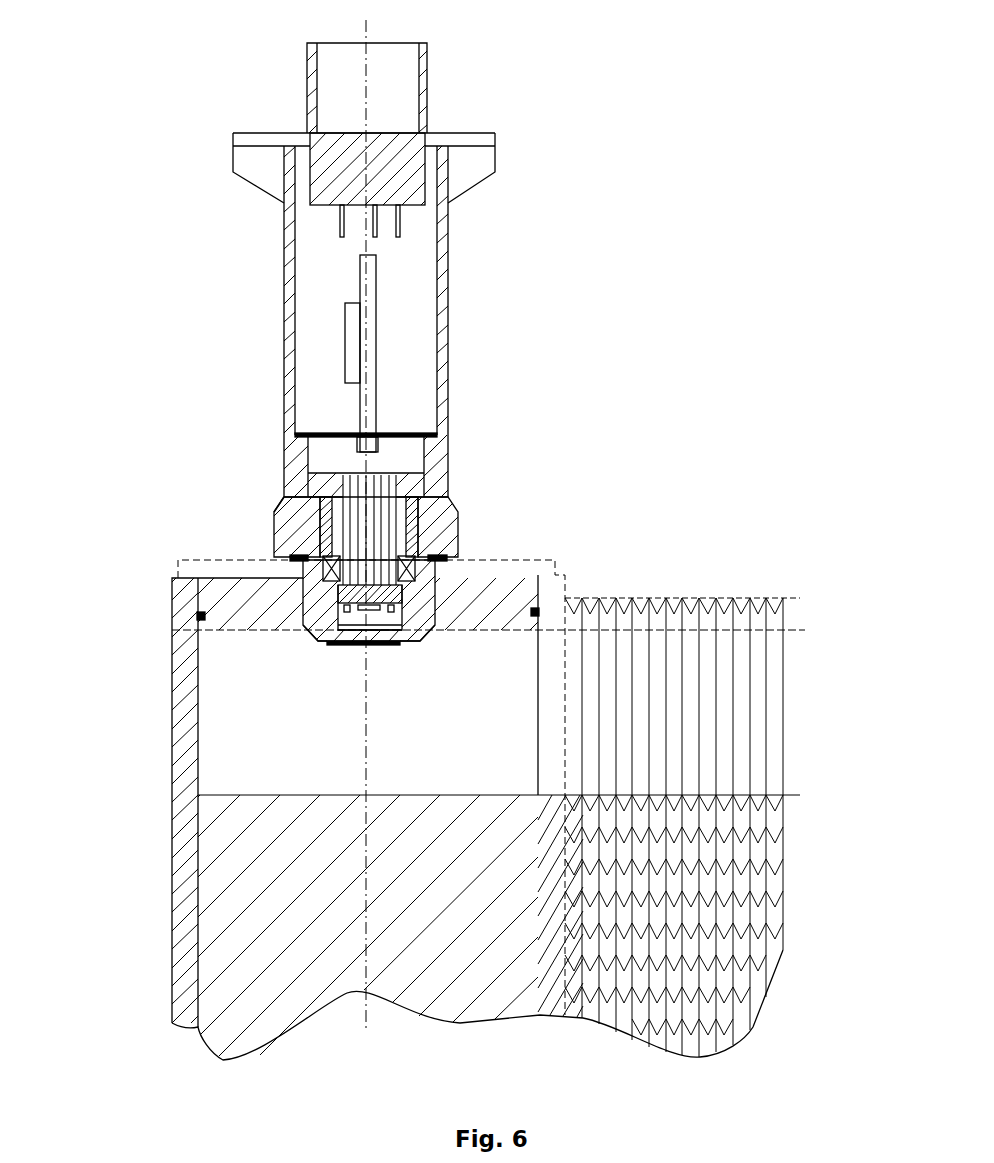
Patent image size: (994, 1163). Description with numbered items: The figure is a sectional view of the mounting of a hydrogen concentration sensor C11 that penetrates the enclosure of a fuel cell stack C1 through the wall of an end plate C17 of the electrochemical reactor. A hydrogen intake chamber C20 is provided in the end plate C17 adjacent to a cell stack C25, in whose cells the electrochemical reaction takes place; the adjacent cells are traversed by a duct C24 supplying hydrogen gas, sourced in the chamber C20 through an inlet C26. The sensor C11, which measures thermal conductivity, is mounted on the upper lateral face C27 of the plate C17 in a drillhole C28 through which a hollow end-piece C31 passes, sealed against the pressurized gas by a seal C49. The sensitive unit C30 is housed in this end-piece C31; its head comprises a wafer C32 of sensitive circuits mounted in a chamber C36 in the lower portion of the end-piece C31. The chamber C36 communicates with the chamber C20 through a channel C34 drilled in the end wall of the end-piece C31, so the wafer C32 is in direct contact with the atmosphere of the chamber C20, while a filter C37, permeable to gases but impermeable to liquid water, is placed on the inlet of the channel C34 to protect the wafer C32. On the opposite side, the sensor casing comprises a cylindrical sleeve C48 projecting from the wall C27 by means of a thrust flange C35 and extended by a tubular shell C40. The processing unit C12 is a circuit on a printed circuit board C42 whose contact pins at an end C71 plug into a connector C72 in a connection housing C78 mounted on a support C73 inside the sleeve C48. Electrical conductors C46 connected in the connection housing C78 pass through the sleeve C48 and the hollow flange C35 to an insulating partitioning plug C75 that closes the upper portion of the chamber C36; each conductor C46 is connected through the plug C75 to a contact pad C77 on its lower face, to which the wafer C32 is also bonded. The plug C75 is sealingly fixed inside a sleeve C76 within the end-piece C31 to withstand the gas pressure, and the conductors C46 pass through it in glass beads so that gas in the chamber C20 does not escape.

The fuel cell stack C1 is at (756, 552).
The hydrogen concentration sensor C11 is at (528, 347).
The processing unit C12 is at (338, 349).
The end plate C17 is at (158, 827).
The hydrogen intake chamber C20 is at (305, 729).
The duct C24 is at (728, 753).
The cell stack C25 is at (780, 800).
The inlet C26 is at (545, 749).
The upper lateral face C27 is at (543, 552).
The drillhole C28 is at (410, 606).
The sensitive unit C30 is at (348, 660).
The hollow end-piece C31 is at (434, 630).
The wafer C32 is at (395, 641).
The channel C34 is at (378, 642).
The thrust flange C35 is at (402, 522).
The chamber C36 is at (365, 608).
The filter C37 is at (335, 645).
The tubular shell C40 is at (449, 322).
The printed circuit board C42 is at (376, 276).
The electrical conductors C46 is at (384, 512).
The cylindrical sleeve C48 is at (445, 505).
The seal C49 is at (448, 572).
The end C71 is at (372, 430).
The connector C72 is at (417, 434).
The support C73 is at (330, 460).
The insulating partitioning plug C75 is at (300, 585).
The sleeve C76 is at (325, 578).
The contact pad C77 is at (400, 640).
The connection housing C78 is at (266, 506).